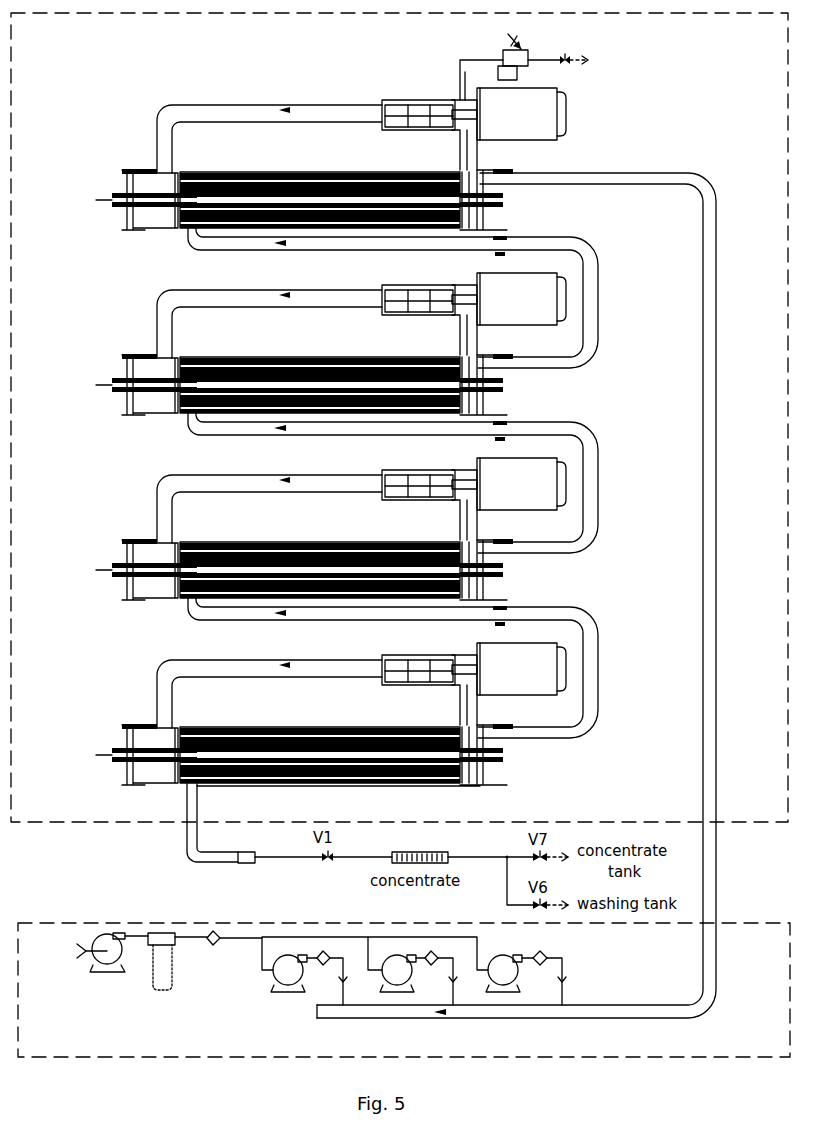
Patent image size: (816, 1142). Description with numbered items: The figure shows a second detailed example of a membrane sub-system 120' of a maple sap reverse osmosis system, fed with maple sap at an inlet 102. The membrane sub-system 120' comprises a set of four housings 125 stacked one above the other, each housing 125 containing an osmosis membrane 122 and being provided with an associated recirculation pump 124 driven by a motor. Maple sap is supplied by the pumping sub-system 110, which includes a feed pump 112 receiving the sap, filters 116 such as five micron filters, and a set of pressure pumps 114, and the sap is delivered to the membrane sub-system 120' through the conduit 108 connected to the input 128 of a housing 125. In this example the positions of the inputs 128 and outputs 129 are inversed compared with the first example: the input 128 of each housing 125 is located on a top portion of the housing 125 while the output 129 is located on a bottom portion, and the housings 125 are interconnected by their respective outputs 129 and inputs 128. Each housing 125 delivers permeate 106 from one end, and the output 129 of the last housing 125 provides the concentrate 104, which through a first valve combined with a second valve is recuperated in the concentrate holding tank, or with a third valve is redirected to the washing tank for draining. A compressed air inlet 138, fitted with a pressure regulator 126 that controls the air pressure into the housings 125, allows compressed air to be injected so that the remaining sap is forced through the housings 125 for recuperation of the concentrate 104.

The maple sap inlet 102 is at (85, 953).
The concentrate 104 is at (240, 858).
The permeate 106 is at (99, 198).
The conduit 108 is at (653, 1013).
The pumping sub-system 110 is at (550, 1058).
The feed pump 112 is at (110, 972).
The pressure pumps 114 is at (272, 975).
The filters 116 is at (173, 952).
The membrane sub-system 120' is at (399, 417).
The osmosis membrane 122 is at (362, 171).
The recirculation pump 124 is at (567, 110).
The housing 125 is at (137, 170).
The pressure regulator 126 is at (503, 53).
The input 128 is at (508, 169).
The output 129 is at (508, 236).
The compressed air inlet 138 is at (570, 53).